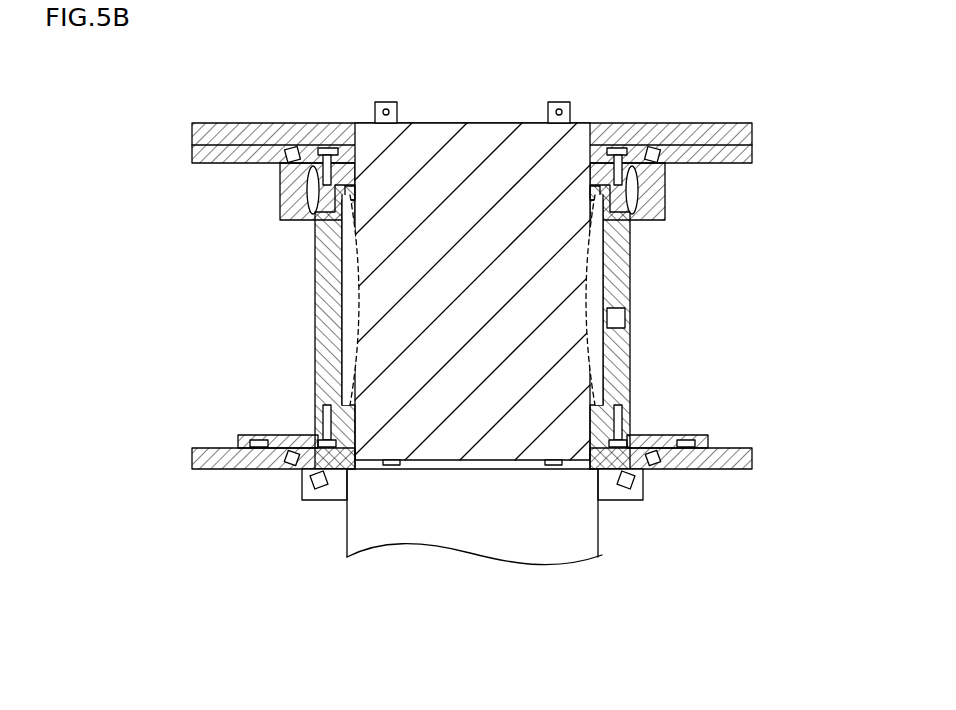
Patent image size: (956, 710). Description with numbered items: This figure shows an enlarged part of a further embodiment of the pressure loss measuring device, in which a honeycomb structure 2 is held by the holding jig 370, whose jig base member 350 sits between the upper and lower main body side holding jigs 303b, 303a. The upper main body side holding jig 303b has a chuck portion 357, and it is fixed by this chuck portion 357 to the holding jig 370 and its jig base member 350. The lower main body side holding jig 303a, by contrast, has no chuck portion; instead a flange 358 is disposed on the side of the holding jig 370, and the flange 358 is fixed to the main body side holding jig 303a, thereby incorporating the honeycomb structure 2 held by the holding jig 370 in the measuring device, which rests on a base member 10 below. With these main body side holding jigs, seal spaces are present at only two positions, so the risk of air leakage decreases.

The honeycomb structure 2 is at (475, 135).
The base member 10 is at (585, 533).
The main body side holding jig 303a is at (755, 460).
The main body side holding jig 303b is at (760, 117).
The jig base member 350 is at (542, 327).
The chuck portion 357 is at (688, 173).
The flange 358 is at (708, 428).
The holding jig 370 is at (632, 350).